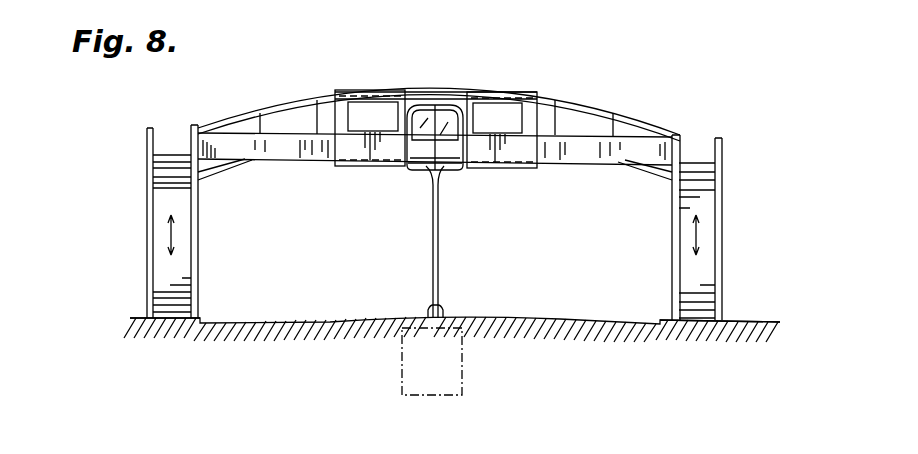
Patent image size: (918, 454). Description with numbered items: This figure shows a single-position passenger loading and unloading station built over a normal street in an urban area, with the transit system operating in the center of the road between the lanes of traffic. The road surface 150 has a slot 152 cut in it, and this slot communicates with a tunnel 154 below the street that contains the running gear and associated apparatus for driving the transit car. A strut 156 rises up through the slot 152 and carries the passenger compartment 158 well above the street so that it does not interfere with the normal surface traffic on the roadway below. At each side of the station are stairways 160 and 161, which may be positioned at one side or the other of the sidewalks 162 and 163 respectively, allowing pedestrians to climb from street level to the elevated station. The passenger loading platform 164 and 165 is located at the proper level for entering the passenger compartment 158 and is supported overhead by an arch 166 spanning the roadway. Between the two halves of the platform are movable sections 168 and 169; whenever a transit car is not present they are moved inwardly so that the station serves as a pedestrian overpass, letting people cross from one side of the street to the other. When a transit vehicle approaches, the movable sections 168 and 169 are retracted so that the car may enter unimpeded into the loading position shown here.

The road surface 150 is at (512, 320).
The slot 152 is at (441, 318).
The tunnel 154 is at (462, 372).
The strut 156 is at (437, 226).
The passenger compartment 158 is at (435, 125).
The stairway 160 is at (718, 256).
The stairway 161 is at (166, 196).
The sidewalk 162 is at (728, 322).
The sidewalk 163 is at (140, 318).
The passenger loading platform 164 is at (582, 156).
The passenger loading platform 165 is at (283, 155).
The arch 166 is at (422, 94).
The movable section 168 is at (512, 156).
The movable section 169 is at (360, 156).